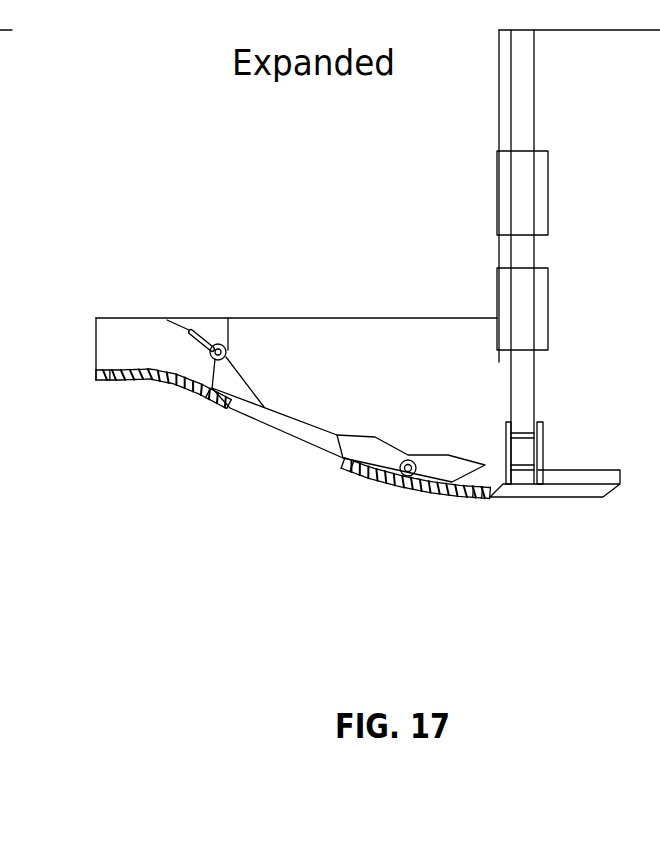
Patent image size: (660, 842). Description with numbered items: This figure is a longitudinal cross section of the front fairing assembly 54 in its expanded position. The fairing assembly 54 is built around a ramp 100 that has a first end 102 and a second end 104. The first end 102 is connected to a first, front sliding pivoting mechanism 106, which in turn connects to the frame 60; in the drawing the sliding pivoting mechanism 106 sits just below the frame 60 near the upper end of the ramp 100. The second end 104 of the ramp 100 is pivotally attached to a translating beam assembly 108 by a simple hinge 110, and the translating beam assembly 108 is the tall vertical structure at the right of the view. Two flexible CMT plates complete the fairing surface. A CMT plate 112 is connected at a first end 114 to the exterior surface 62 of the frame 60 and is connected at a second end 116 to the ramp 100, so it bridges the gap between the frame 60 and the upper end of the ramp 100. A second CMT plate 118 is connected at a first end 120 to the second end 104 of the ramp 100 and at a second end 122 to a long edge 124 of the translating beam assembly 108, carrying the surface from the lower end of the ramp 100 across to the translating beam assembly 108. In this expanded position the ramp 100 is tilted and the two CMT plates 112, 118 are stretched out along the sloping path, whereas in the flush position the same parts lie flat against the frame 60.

The fairing assembly 54 is at (331, 192).
The frame 60 is at (113, 327).
The exterior surface 62 is at (101, 369).
The ramp 100 is at (300, 397).
The first end 102 is at (227, 409).
The second end 104 is at (343, 468).
The sliding pivoting mechanism 106 is at (232, 348).
The translating beam assembly 108 is at (538, 393).
The simple hinge 110 is at (410, 457).
The CMT plate 112 is at (155, 381).
The first end 114 is at (98, 381).
The second end 116 is at (207, 403).
The CMT plate 118 is at (413, 495).
The first end 120 is at (350, 472).
The second end 122 is at (471, 499).
The long edge 124 is at (510, 492).